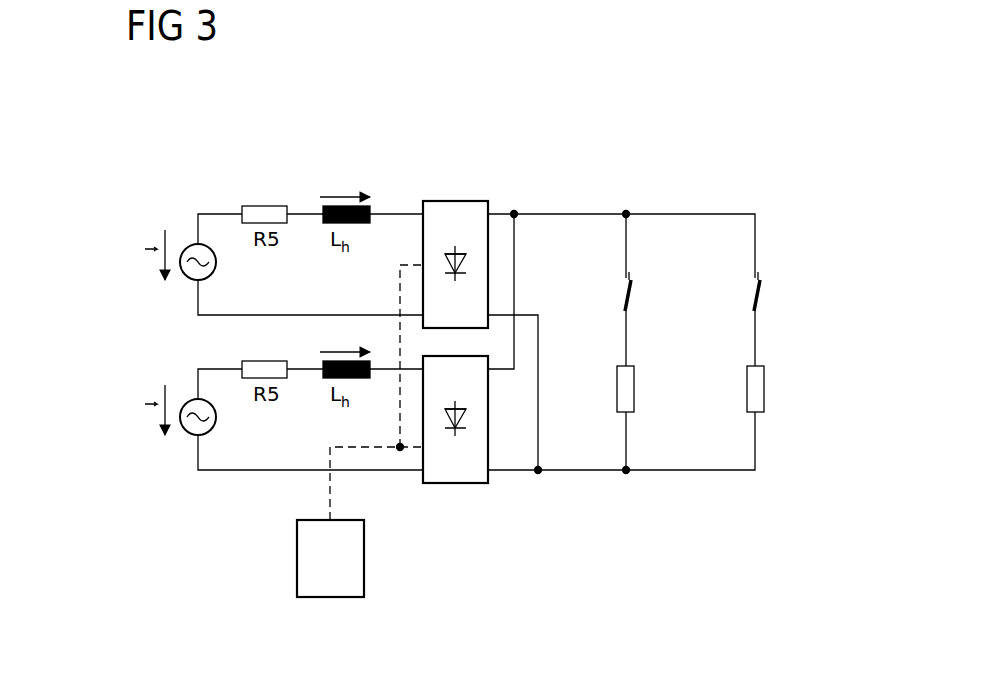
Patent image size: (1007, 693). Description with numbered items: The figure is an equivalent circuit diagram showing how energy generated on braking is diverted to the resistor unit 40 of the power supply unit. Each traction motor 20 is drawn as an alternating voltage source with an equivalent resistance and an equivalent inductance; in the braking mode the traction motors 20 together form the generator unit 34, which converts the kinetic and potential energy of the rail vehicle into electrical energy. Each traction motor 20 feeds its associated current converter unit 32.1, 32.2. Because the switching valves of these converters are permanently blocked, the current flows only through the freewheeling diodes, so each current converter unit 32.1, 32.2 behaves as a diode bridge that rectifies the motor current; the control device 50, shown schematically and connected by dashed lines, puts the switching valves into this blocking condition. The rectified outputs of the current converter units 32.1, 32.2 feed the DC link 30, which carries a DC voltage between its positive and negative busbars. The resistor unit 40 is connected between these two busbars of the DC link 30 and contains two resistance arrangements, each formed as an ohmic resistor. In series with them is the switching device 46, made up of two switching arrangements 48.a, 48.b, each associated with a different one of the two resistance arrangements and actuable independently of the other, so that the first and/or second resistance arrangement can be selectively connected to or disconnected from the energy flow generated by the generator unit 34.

The traction motor 20 is at (130, 226).
The generator unit 34 is at (130, 340).
The first current converter unit 32.1 is at (452, 201).
The second current converter unit 32.2 is at (452, 483).
The DC link 30 is at (579, 476).
The resistor unit 40 is at (739, 331).
The switching device 46 is at (786, 203).
The first switching arrangement 48.a is at (636, 291).
The second switching arrangement 48.b is at (765, 291).
The control device 50 is at (330, 597).